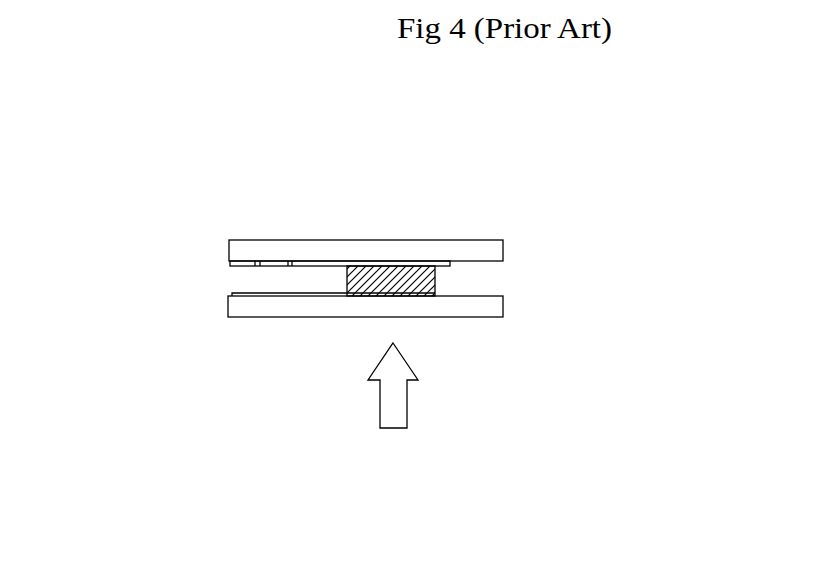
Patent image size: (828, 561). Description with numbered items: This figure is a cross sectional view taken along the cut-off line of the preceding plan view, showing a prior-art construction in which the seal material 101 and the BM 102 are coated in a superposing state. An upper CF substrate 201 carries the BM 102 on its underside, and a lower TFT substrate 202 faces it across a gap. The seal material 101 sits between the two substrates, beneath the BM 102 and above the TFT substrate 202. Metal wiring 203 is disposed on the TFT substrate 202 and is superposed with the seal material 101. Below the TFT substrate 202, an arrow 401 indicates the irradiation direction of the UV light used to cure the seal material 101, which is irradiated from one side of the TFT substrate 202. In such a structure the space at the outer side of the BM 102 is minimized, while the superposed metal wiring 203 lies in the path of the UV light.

The seal material 101 is at (410, 297).
The BM 102 is at (333, 262).
The CF substrate 201 is at (503, 250).
The TFT substrate 202 is at (505, 303).
The metal wiring 203 is at (247, 295).
The arrow 401 is at (393, 428).